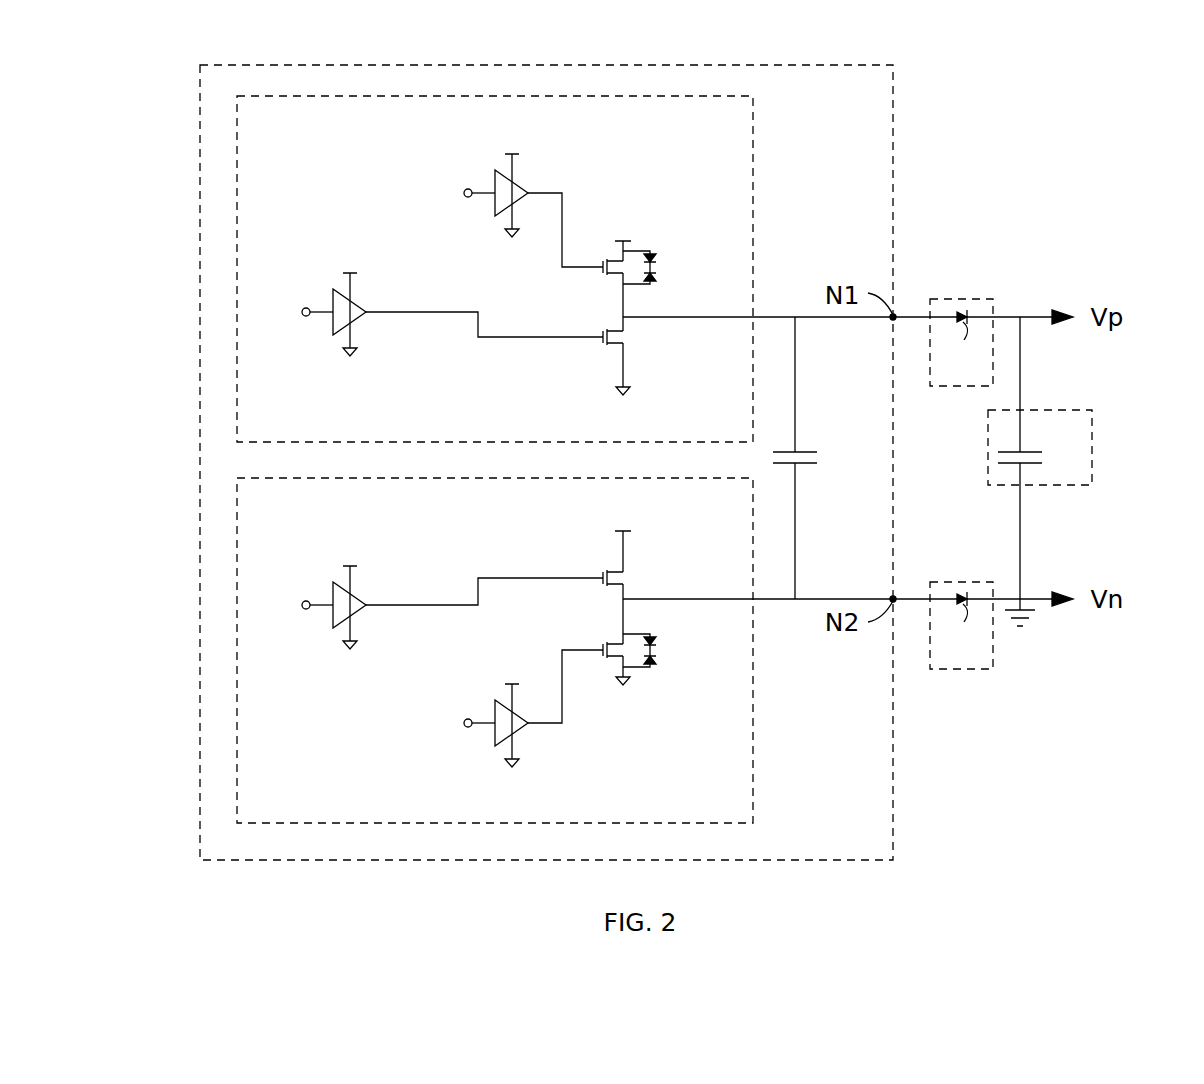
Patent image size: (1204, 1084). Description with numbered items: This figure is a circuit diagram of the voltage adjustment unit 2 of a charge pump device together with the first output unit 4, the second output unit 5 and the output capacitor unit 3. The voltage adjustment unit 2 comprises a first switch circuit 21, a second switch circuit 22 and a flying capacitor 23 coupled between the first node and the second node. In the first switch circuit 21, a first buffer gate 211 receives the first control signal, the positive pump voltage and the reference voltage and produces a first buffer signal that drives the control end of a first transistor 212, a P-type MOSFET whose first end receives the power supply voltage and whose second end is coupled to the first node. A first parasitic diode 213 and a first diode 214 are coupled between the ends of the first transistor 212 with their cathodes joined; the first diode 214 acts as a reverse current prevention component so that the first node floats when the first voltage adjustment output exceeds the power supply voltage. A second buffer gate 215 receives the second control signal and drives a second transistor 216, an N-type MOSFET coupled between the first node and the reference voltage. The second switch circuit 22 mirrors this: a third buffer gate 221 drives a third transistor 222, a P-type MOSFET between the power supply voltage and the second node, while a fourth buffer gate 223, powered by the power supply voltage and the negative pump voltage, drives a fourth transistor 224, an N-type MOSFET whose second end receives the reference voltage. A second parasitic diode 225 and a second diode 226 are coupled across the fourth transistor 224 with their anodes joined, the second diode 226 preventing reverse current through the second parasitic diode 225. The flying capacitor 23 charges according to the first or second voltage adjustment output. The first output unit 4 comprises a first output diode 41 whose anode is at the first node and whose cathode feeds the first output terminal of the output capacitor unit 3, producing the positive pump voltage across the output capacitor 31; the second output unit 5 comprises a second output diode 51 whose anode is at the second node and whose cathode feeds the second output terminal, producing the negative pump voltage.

The voltage adjustment unit 2 is at (896, 156).
The first switch circuit 21 is at (756, 184).
The second switch circuit 22 is at (756, 776).
The first buffer gate 211 is at (497, 206).
The second buffer gate 215 is at (356, 302).
The first transistor 212 is at (599, 299).
The second transistor 216 is at (599, 367).
The first parasitic diode 213 is at (657, 276).
The first diode 214 is at (657, 260).
The third buffer gate 221 is at (356, 614).
The fourth buffer gate 223 is at (497, 744).
The third transistor 222 is at (599, 550).
The fourth transistor 224 is at (599, 616).
The second parasitic diode 225 is at (657, 642).
The second diode 226 is at (657, 657).
The flying capacitor 23 is at (807, 451).
The output capacitor unit 3 is at (1093, 440).
The output capacitor 31 is at (1031, 451).
The first output unit 4 is at (955, 300).
The first output diode 41 is at (960, 342).
The second output unit 5 is at (955, 583).
The second output diode 51 is at (960, 625).